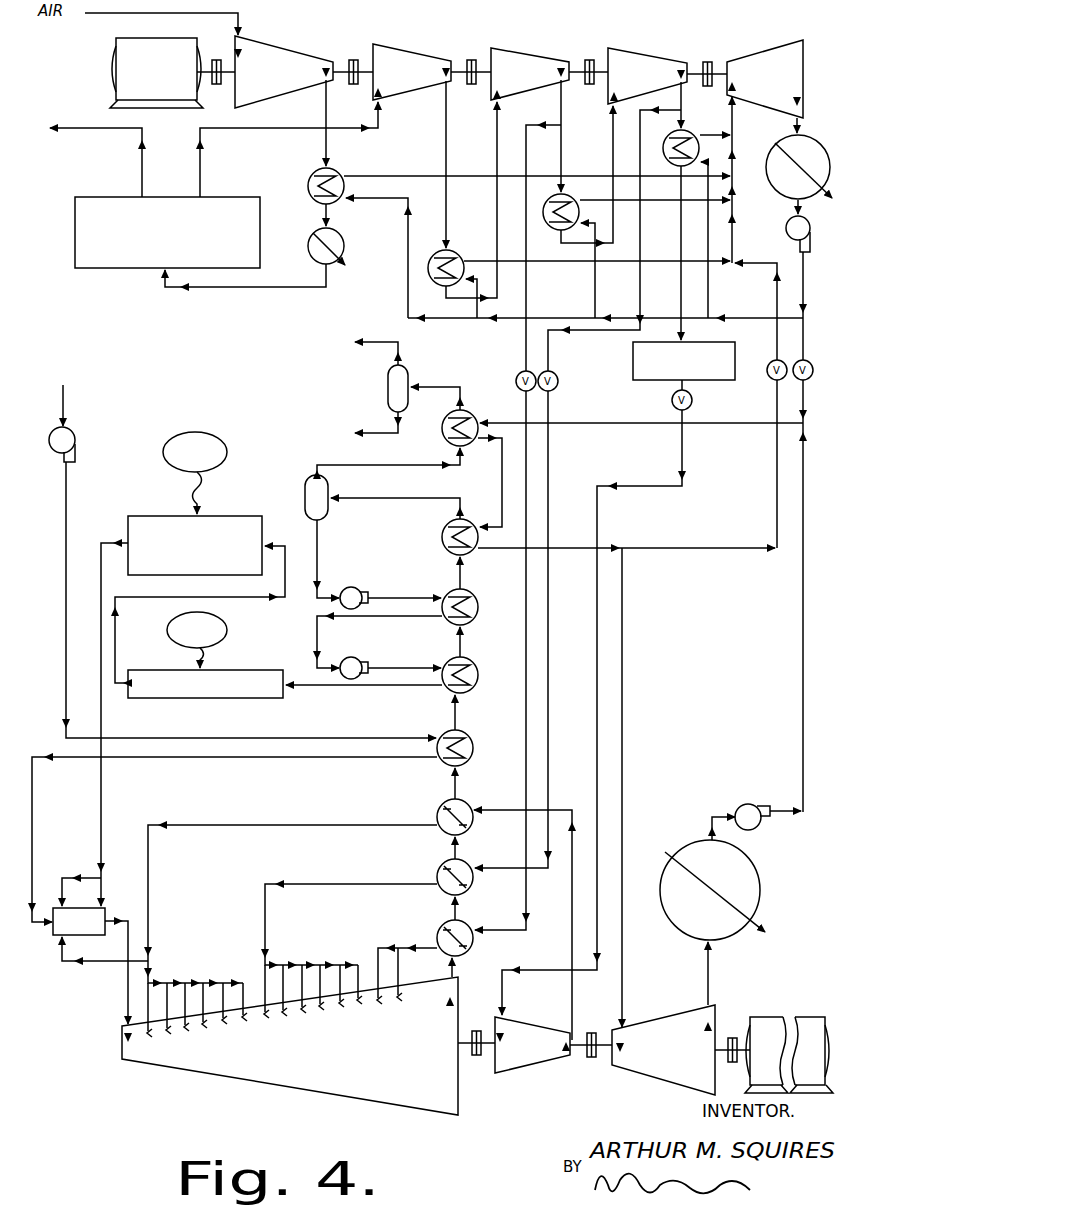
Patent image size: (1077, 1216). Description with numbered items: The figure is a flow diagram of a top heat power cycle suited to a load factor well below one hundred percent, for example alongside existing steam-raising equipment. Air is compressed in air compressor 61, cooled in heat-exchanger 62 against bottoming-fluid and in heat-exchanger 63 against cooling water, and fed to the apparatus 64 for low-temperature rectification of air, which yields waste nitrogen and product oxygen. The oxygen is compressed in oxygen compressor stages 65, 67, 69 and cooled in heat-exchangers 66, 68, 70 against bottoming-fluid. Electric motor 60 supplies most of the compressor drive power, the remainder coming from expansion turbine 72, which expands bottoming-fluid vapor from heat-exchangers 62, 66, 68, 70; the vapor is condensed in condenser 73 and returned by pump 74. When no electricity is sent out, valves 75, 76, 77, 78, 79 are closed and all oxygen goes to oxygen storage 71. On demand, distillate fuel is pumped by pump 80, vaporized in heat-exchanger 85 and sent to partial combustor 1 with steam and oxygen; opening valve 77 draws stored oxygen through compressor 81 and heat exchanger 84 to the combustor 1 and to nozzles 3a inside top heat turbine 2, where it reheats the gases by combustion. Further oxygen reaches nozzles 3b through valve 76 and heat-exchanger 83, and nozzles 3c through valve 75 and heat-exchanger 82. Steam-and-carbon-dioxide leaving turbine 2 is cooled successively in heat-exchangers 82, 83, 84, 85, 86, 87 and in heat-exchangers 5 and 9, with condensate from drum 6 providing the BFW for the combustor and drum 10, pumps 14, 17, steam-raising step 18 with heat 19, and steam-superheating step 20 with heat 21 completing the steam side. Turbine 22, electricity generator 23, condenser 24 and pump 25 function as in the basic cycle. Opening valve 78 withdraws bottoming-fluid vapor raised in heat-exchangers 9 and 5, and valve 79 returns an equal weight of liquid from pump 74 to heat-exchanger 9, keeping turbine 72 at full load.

The partial combustor 1 is at (50, 937).
The top heat turbine 2 is at (396, 1095).
The nozzles 3a is at (150, 1036).
The nozzles 3b is at (268, 1016).
The nozzles 3c is at (380, 1003).
The heat-exchanger 5 is at (447, 529).
The drum 6 is at (303, 492).
The heat-exchanger 9 is at (442, 434).
The drum 10 is at (409, 373).
The pump 14 is at (353, 587).
The pump 17 is at (359, 647).
The steam-raising step 18 is at (232, 668).
The heat 19 is at (227, 628).
The steam-superheating step 20 is at (227, 519).
The heat 21 is at (216, 437).
The turbine 22 is at (672, 1062).
The electricity generator 23 is at (777, 1059).
The condenser 24 is at (762, 880).
The pump 25 is at (758, 806).
The electric motor 60 is at (165, 77).
The air compressor 61 is at (287, 79).
The heat-exchanger 62 is at (343, 172).
The heat-exchanger 63 is at (343, 247).
The apparatus for low-temperature rectification of air 64 is at (92, 270).
The oxygen compressor stage 65 is at (420, 80).
The heat-exchanger 66 is at (432, 253).
The oxygen compressor stage 67 is at (538, 81).
The heat-exchanger 68 is at (548, 229).
The oxygen compressor stage 69 is at (651, 83).
The heat-exchanger 70 is at (685, 131).
The oxygen storage 71 is at (632, 372).
The expansion turbine 72 is at (775, 82).
The condenser 73 is at (814, 143).
The pump 74 is at (811, 228).
The valve 75 is at (518, 378).
The valve 76 is at (559, 379).
The valve 77 is at (692, 400).
The valve 78 is at (769, 366).
The valve 79 is at (808, 364).
The pump 80 is at (76, 438).
The compressor 81 is at (533, 1059).
The heat-exchanger 82 is at (441, 928).
The heat-exchanger 83 is at (441, 868).
The heat exchanger 84 is at (440, 806).
The heat-exchanger 85 is at (469, 737).
The heat-exchanger 86 is at (473, 666).
The heat-exchanger 87 is at (472, 598).